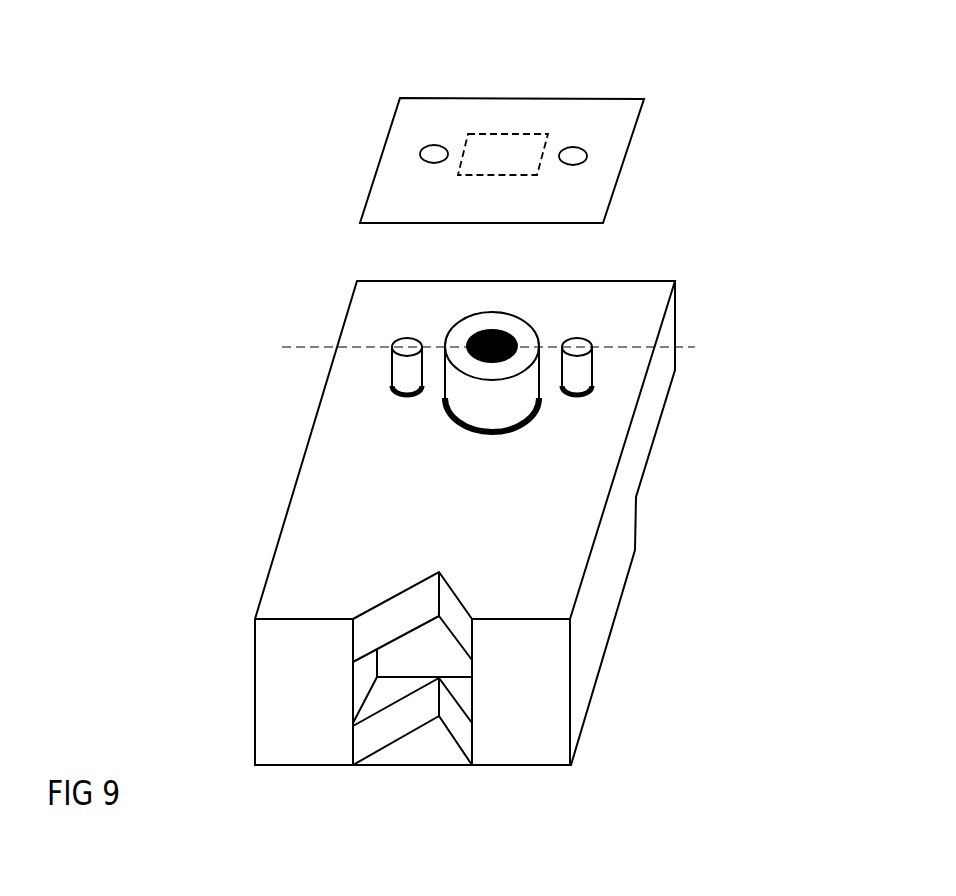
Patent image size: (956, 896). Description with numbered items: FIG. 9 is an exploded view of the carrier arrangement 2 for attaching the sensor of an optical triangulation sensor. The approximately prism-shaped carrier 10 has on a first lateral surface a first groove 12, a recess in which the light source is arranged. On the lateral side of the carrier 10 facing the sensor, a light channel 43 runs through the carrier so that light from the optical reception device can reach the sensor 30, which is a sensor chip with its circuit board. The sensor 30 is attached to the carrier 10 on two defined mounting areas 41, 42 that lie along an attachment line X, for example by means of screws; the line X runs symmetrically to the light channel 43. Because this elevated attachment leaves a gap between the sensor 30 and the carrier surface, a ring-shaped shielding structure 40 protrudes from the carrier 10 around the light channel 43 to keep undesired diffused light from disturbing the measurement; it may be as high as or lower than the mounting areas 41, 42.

The assembly 2 is at (771, 85).
The sensor 30 is at (390, 127).
The carrier 10 is at (598, 588).
The first groove 12 is at (458, 593).
The shielding structure 40 is at (532, 327).
The light channel 43 is at (475, 358).
The mounting area 42 is at (403, 377).
The mounting area 41 is at (582, 371).